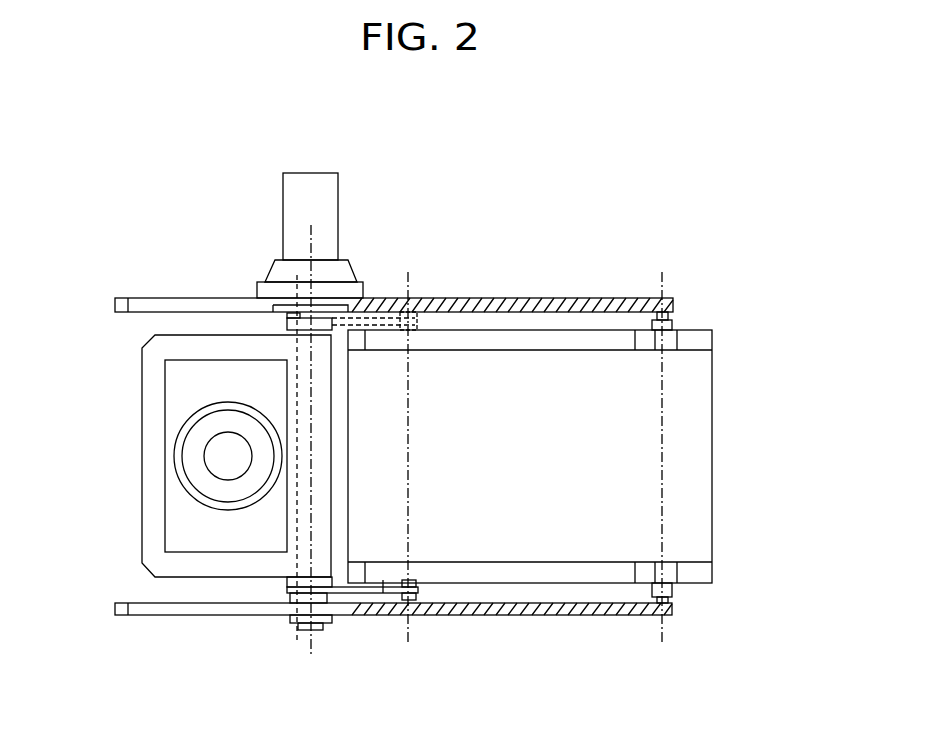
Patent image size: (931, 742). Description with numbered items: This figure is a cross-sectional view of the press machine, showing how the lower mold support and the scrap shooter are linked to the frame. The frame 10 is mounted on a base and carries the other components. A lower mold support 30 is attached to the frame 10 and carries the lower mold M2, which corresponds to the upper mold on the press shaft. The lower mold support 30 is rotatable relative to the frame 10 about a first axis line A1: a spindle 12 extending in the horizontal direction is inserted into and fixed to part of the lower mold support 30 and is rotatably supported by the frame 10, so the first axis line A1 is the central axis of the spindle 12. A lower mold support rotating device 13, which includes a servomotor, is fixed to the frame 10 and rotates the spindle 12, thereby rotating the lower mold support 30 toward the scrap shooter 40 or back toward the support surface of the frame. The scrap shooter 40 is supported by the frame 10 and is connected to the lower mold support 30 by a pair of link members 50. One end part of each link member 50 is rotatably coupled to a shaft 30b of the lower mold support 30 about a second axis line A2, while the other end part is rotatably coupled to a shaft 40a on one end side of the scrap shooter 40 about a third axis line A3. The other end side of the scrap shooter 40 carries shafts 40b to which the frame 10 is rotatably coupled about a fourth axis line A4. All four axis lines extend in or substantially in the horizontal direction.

The lower mold support rotating device 13 is at (283, 200).
The frame 10 is at (550, 298).
The spindle 12 is at (318, 632).
The lower mold support 30 is at (142, 407).
The lower mold M2 is at (182, 457).
The second axis line A2 is at (297, 533).
The shafts 30b is at (293, 595).
The first axis line A1 is at (310, 648).
The scrap shooter 40 is at (713, 415).
The link members 50 is at (383, 322).
The third axis line A3 is at (410, 497).
The shafts 40a is at (413, 596).
The shafts 40b is at (673, 598).
The fourth axis line A4 is at (664, 636).